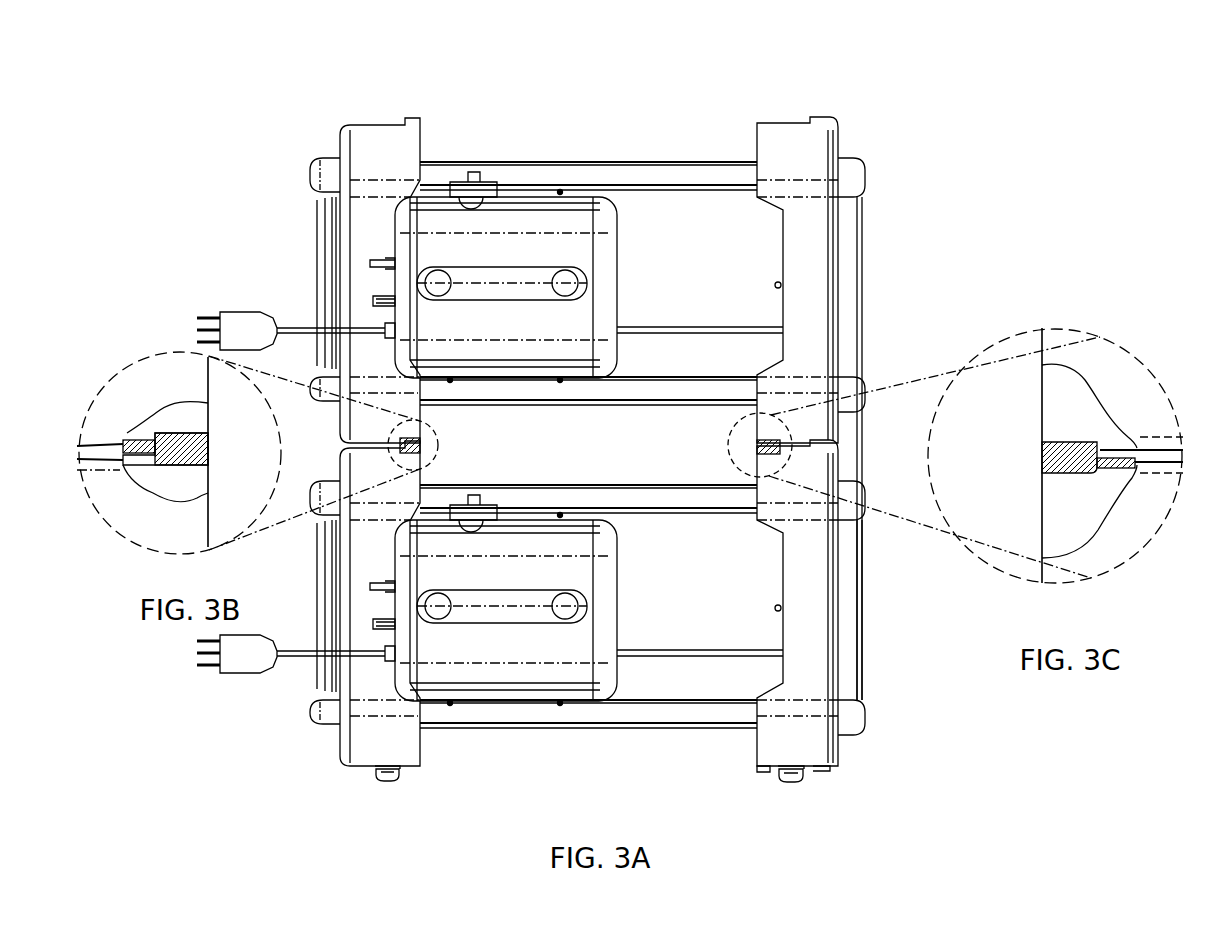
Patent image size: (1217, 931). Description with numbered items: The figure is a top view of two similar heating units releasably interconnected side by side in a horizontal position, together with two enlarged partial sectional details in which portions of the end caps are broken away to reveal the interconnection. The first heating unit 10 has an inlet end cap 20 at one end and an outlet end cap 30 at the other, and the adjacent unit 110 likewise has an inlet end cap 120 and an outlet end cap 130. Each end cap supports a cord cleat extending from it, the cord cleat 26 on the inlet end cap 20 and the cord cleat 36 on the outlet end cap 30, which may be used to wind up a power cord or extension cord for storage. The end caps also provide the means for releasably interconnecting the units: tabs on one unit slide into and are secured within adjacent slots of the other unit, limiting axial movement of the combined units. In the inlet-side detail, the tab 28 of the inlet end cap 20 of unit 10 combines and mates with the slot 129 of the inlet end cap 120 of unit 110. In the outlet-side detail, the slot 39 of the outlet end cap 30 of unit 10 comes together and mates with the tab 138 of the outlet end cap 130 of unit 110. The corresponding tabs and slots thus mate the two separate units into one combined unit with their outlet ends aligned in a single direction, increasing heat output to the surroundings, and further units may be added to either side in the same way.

In FIG. 3A, the heating unit 10 is at (905, 690).
In FIG. 3B, the heating unit 10 is at (218, 508).
In FIG. 3C, the heating unit 10 is at (1030, 548).
In FIG. 3A, the inlet end cap 20 is at (358, 790).
In FIG. 3B, the inlet end cap 20 is at (140, 530).
In FIG. 3A, the cord cleat 26 is at (388, 783).
In FIG. 3B, the tab 28 is at (200, 452).
In FIG. 3A, the outlet end cap 30 is at (822, 790).
In FIG. 3C, the outlet end cap 30 is at (1105, 555).
In FIG. 3A, the cord cleat 36 is at (797, 784).
In FIG. 3C, the slot 39 is at (1100, 480).
In FIG. 3A, the unit 110 is at (958, 178).
In FIG. 3B, the unit 110 is at (218, 378).
In FIG. 3C, the unit 110 is at (1033, 396).
In FIG. 3A, the inlet end cap 120 is at (362, 108).
In FIG. 3B, the inlet end cap 120 is at (100, 410).
In FIG. 3B, the slot 129 is at (150, 440).
In FIG. 3A, the outlet end cap 130 is at (805, 115).
In FIG. 3C, the outlet end cap 130 is at (1092, 350).
In FIG. 3C, the tab 138 is at (1080, 455).